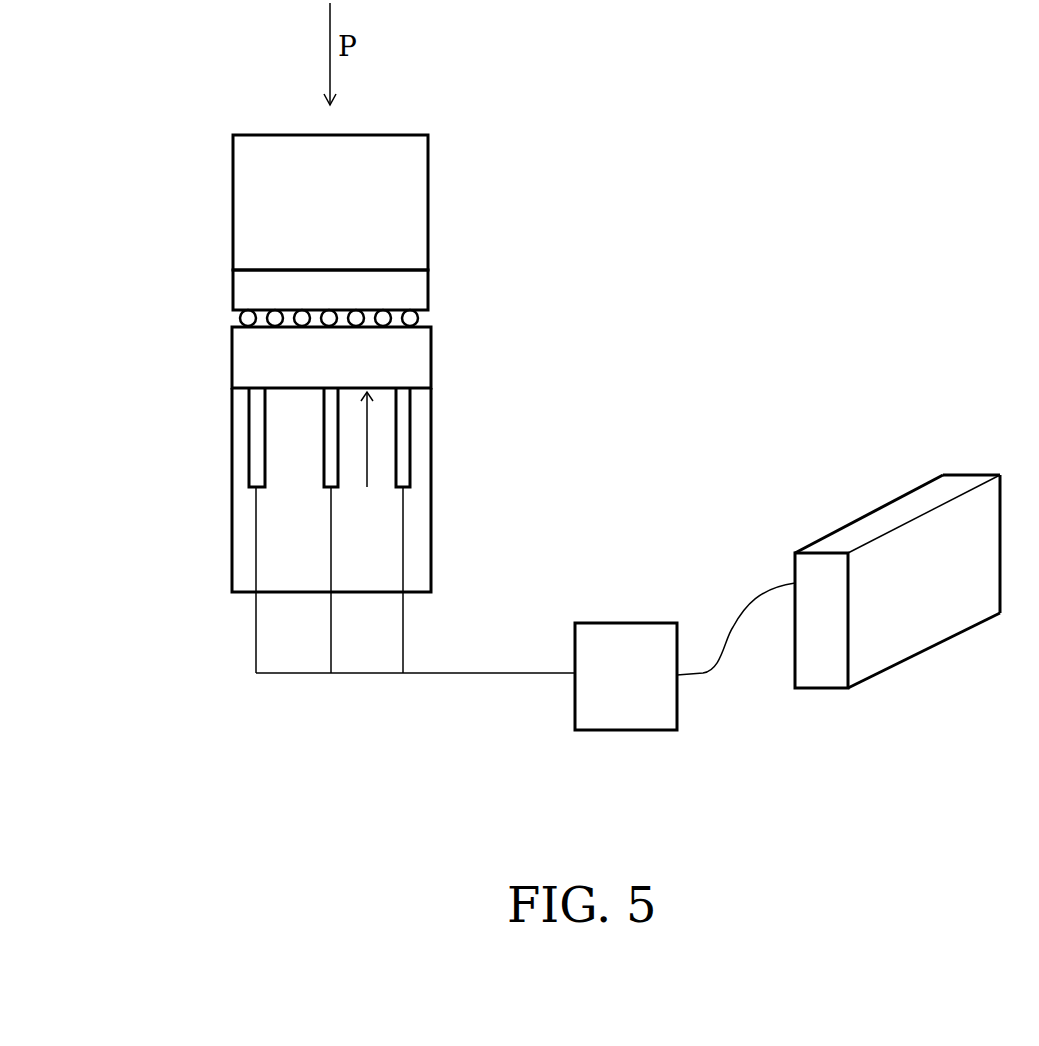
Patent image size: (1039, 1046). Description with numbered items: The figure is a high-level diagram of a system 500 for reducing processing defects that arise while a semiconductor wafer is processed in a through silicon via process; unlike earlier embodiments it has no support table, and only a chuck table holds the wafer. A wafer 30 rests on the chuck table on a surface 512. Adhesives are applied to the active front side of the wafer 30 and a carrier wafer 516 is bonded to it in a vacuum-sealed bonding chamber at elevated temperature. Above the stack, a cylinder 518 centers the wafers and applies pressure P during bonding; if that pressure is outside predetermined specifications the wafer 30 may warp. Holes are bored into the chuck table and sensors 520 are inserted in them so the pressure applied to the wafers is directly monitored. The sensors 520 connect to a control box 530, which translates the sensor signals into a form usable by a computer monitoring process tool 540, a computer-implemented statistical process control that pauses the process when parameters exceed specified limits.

The system 500 is at (760, 173).
The cylinder 518 is at (243, 203).
The carrier wafer 516 is at (420, 291).
The wafer 30 is at (420, 361).
The sensors 520 is at (322, 422).
The surface 512 is at (359, 460).
The control box 530 is at (626, 676).
The computer monitoring process tool 540 is at (897, 581).